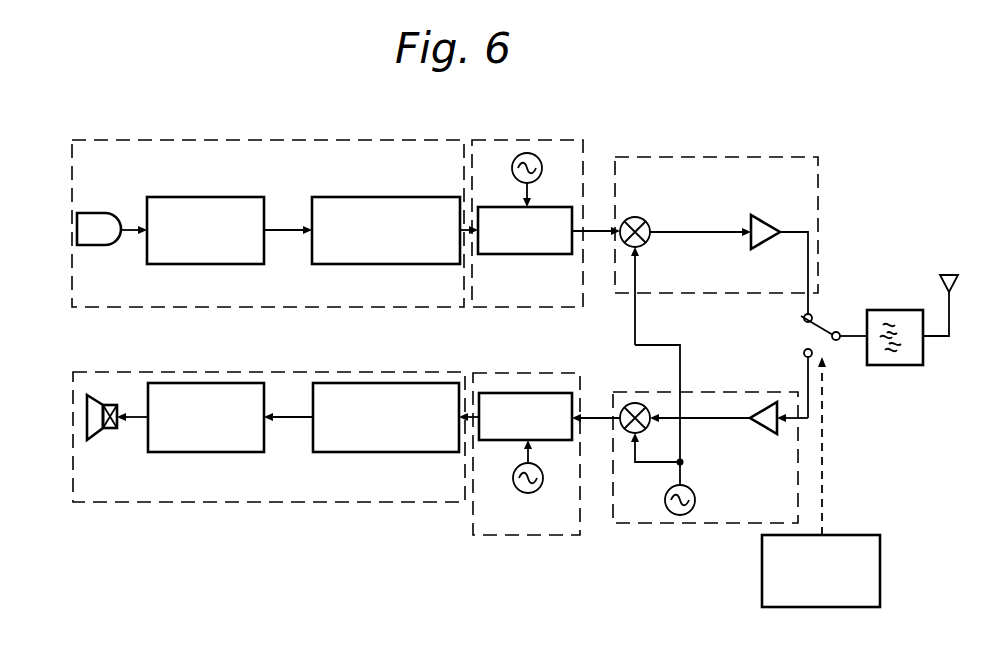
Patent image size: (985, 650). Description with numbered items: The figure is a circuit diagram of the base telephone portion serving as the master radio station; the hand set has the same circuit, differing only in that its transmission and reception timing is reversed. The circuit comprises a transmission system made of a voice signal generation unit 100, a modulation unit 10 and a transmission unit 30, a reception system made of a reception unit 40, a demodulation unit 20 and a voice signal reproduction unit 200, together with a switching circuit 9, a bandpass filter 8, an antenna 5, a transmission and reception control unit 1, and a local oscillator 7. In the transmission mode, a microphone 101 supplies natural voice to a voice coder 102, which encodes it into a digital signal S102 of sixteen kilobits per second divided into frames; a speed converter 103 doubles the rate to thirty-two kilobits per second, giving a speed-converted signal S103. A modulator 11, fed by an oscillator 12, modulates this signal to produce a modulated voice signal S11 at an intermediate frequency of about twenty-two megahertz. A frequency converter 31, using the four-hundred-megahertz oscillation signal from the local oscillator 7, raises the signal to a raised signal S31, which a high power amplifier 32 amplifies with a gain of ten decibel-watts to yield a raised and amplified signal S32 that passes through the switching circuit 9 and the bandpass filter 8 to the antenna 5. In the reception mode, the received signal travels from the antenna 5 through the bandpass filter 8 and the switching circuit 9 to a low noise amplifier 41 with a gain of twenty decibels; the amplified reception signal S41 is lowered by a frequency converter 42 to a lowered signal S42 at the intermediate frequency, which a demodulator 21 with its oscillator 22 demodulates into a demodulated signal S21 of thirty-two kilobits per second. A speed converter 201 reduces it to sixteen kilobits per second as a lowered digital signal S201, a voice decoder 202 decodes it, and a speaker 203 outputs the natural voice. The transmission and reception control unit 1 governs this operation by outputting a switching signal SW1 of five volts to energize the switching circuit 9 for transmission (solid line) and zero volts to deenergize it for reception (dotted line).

The voice signal generation unit 100 is at (255, 140).
The microphone 101 is at (95, 213).
The voice coder 102 is at (212, 197).
The speed converter 103 is at (366, 197).
The digital signal S102 is at (283, 236).
The speed-converted signal S103 is at (466, 236).
The modulation unit 10 is at (481, 140).
The modulator 11 is at (488, 207).
The oscillator 12 is at (528, 153).
The modulated voice signal S11 is at (586, 225).
The transmission unit 30 is at (687, 157).
The frequency converter 31 is at (642, 218).
The high power amplifier 32 is at (770, 220).
The raised signal S31 is at (682, 232).
The raised and amplified signal S32 is at (804, 223).
The switching circuit 9 is at (822, 318).
The bandpass filter 8 is at (897, 310).
The antenna 5 is at (957, 276).
The transmission and reception control unit 1 is at (868, 535).
The switching signal SW1 is at (843, 446).
The reception unit 40 is at (696, 392).
The low noise amplifier 41 is at (780, 428).
The frequency converter 42 is at (626, 432).
The local oscillator 7 is at (680, 515).
The amplified reception signal S41 is at (733, 418).
The lowered signal S42 is at (598, 418).
The demodulation unit 20 is at (505, 535).
The demodulator 21 is at (484, 443).
The oscillator 22 is at (528, 493).
The demodulated signal S21 is at (468, 417).
The voice signal reproduction unit 200 is at (290, 502).
The speed converter 201 is at (372, 452).
The voice decoder 202 is at (207, 452).
The speaker 203 is at (97, 440).
The lowered digital signal S201 is at (290, 417).